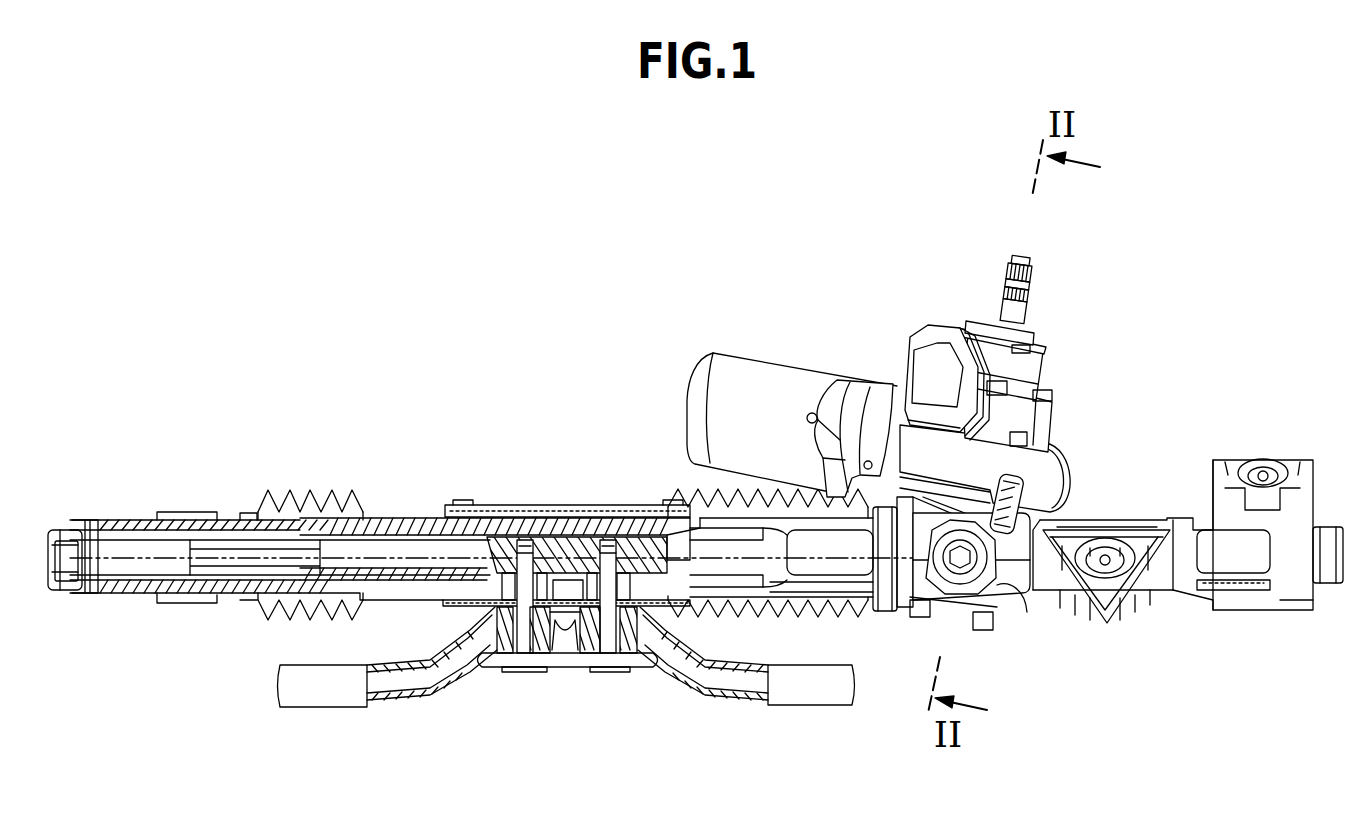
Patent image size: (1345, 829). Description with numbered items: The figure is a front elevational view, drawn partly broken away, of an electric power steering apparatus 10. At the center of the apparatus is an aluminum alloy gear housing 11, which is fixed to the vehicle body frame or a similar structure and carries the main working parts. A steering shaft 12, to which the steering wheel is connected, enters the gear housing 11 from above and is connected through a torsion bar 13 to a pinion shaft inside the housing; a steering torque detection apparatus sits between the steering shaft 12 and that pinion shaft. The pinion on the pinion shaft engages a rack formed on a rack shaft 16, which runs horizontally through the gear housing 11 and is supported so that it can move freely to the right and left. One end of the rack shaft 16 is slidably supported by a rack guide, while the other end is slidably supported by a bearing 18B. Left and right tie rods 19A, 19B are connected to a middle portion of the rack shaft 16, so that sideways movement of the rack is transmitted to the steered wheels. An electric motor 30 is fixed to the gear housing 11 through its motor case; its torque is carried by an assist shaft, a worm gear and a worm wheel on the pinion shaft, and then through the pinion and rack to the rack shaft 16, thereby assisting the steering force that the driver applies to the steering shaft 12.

The electric power steering apparatus 10 is at (500, 362).
The gear housing 11 is at (1025, 372).
The steering shaft 12 is at (1015, 313).
The torsion bar 13 is at (1030, 258).
The rack shaft 16 is at (640, 550).
The bearing 18B is at (362, 598).
The left tie rod 19A is at (332, 695).
The right tie rod 19B is at (821, 695).
The electric motor 30 is at (774, 388).